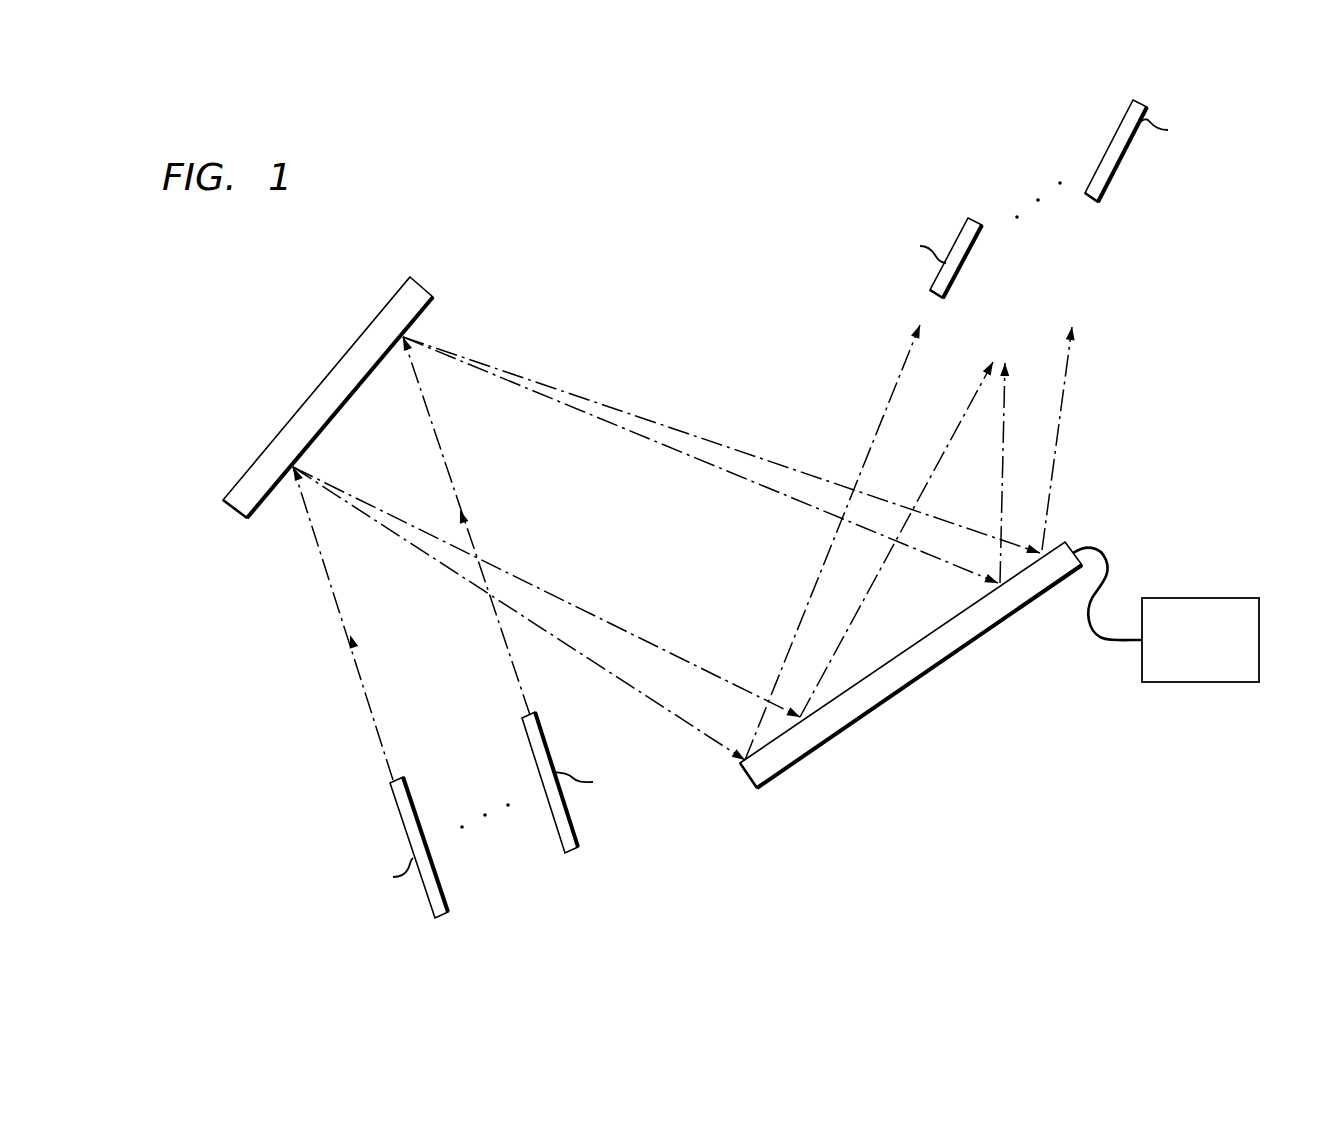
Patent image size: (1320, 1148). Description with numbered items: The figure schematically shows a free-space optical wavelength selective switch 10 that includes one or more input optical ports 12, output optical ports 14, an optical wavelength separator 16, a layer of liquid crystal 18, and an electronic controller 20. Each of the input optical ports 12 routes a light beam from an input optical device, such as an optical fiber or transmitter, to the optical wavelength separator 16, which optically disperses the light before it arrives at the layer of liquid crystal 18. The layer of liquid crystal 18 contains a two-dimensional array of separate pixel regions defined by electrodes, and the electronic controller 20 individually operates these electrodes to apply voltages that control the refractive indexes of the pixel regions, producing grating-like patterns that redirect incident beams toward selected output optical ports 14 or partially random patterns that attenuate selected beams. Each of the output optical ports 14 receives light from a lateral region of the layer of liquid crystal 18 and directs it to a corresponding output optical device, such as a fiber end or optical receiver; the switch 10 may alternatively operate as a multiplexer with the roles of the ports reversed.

The free-space optical wavelength selective switch 10 is at (231, 265).
The input optical ports 12 is at (377, 788).
The output optical ports 14 is at (1122, 204).
The optical wavelength separator 16 is at (417, 293).
The layer of liquid crystal 18 is at (920, 667).
The electronic controller 20 is at (1213, 652).